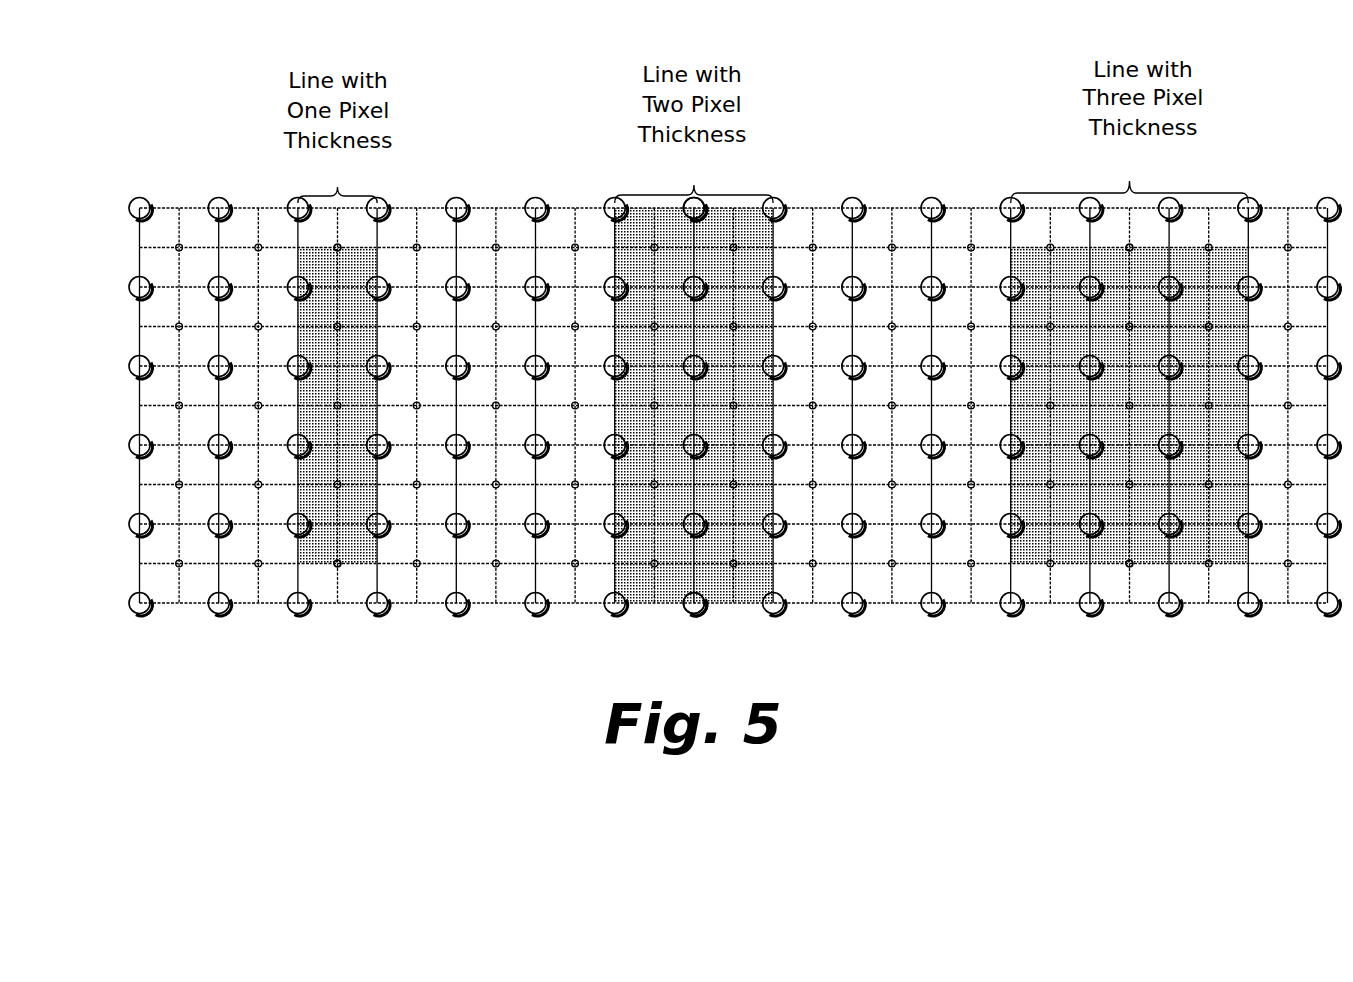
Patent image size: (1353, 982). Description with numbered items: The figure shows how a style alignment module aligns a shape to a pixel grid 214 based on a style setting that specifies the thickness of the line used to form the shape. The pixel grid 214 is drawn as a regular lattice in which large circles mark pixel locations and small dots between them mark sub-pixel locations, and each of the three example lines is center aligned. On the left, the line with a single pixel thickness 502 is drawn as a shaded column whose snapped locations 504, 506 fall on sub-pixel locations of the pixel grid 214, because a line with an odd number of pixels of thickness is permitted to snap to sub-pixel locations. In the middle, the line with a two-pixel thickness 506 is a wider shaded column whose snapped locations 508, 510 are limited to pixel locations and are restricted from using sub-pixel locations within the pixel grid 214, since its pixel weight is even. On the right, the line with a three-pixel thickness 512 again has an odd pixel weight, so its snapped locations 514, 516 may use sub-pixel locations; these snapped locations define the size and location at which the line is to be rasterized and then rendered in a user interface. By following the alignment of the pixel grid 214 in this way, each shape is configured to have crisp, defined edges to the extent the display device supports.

The pixel grid 214 is at (191, 106).
The line with a single pixel thickness 502 is at (357, 184).
The snapped location 504 is at (338, 245).
The line with a two-pixel thickness 506 is at (673, 177).
The snapped location 508 is at (689, 201).
The snapped location 510 is at (690, 609).
The line with a three-pixel thickness 512 is at (1124, 170).
The snapped location 514 is at (1130, 245).
The snapped location 516 is at (1130, 566).